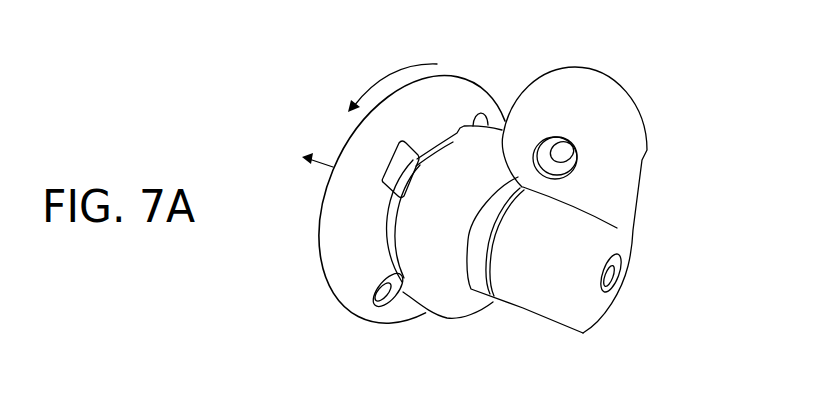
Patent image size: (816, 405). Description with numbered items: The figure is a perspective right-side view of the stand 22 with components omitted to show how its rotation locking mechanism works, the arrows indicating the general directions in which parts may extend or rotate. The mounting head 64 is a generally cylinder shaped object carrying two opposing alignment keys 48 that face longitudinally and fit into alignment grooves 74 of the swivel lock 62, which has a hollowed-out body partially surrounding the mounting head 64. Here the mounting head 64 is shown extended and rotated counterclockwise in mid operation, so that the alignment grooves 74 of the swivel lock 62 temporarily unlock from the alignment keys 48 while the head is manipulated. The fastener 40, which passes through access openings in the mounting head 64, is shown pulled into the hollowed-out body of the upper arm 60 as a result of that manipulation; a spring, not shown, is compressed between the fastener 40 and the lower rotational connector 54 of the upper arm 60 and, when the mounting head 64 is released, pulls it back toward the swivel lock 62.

The stand 22 is at (258, 65).
The mounting head 64 is at (480, 65).
The alignment keys 48 is at (393, 176).
The alignment grooves 74 is at (450, 147).
The swivel lock 62 is at (452, 337).
The upper arm 60 is at (658, 205).
The lower rotational connector 54 is at (607, 93).
The fastener 40 is at (613, 277).